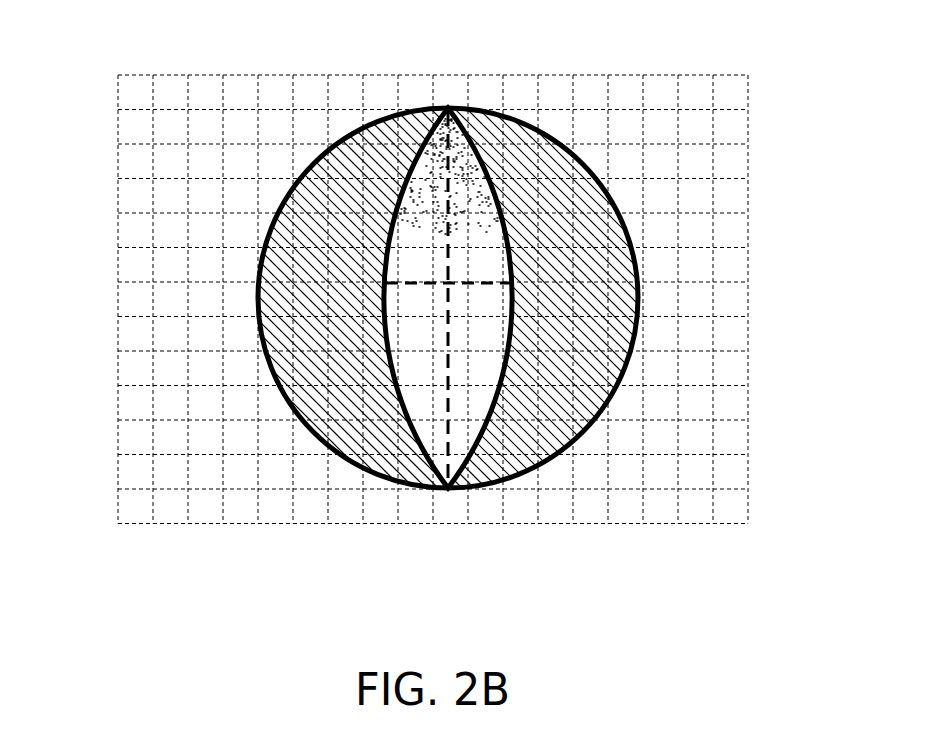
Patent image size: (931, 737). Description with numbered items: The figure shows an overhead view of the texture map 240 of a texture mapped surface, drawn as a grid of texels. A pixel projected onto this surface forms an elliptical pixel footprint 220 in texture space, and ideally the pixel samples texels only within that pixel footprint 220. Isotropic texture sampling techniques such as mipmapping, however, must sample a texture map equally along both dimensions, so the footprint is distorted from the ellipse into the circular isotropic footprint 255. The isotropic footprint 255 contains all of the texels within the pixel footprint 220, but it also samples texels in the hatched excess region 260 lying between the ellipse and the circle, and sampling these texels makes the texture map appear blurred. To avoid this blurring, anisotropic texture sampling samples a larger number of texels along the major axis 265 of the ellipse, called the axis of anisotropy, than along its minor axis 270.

The texture map 240 is at (118, 145).
The isotropic footprint 255 is at (537, 470).
The pixel footprint 220 is at (483, 470).
The excess region 260 is at (331, 292).
The major axis 265 is at (463, 110).
The minor axis 270 is at (510, 280).